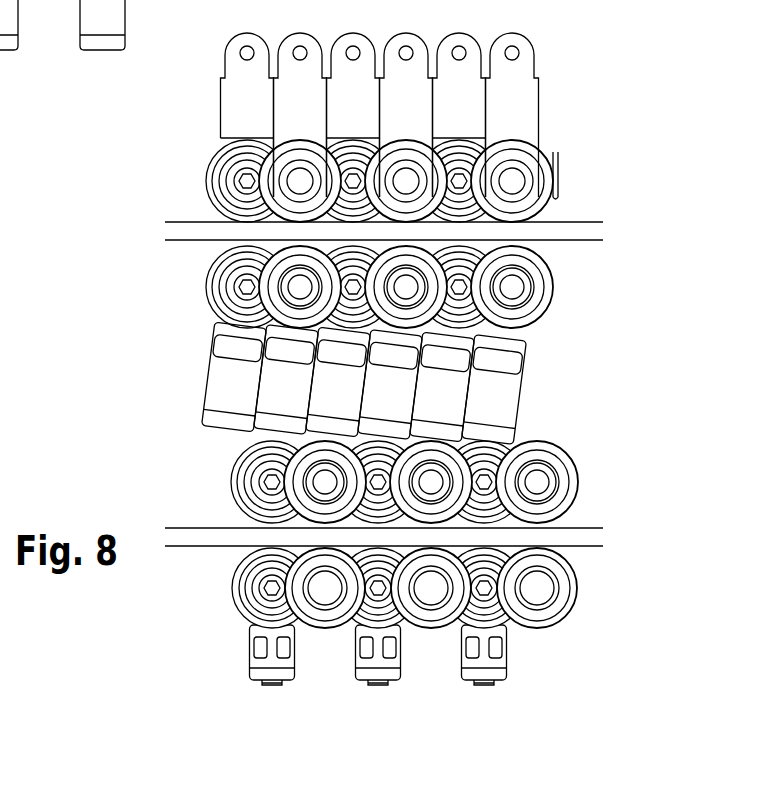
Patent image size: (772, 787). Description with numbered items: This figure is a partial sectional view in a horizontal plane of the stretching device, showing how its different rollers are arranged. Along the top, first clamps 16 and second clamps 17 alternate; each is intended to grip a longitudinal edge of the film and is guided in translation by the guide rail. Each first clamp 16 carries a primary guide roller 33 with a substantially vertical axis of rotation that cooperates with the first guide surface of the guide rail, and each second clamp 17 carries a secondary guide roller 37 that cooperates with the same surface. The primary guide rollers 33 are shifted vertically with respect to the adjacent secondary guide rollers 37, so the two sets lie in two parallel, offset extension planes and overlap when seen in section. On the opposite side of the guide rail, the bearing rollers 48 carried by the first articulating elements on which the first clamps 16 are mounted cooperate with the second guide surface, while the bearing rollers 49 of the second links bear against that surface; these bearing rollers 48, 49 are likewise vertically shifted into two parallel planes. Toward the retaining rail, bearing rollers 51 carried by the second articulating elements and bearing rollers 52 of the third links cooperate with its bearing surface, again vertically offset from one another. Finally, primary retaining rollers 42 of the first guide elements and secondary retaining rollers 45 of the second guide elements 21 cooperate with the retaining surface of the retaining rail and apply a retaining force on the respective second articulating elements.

The first clamp 16 is at (292, 92).
The second clamp 17 is at (465, 84).
The second guide element 21 is at (365, 658).
The primary guide roller 33 is at (398, 153).
The secondary guide roller 37 is at (353, 150).
The primary retaining roller 42 is at (577, 597).
The secondary retaining roller 45 is at (233, 580).
The bearing roller 48 is at (555, 286).
The bearing roller 49 is at (212, 273).
The bearing roller 51 is at (373, 436).
The bearing roller 52 is at (486, 444).